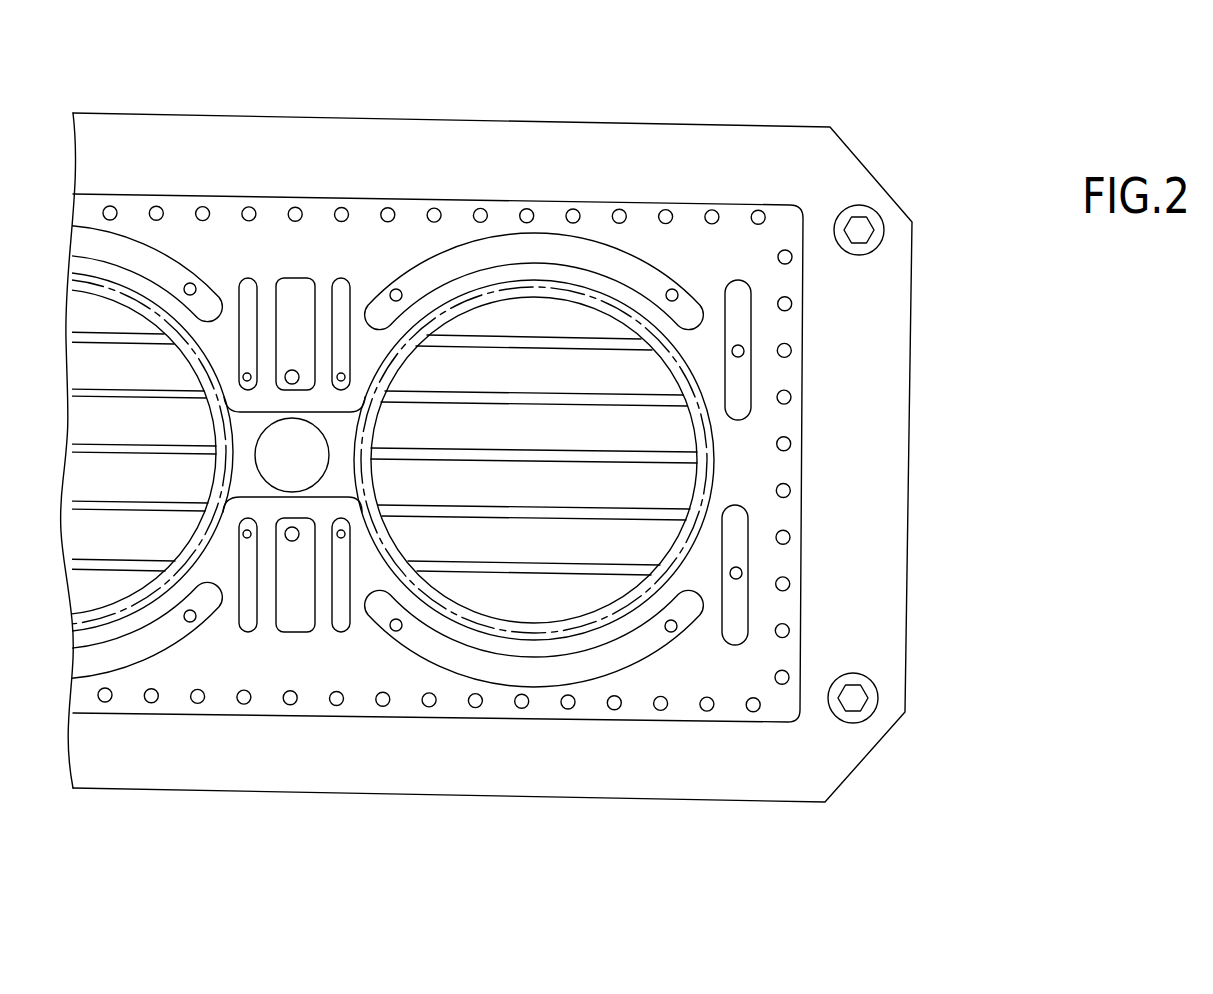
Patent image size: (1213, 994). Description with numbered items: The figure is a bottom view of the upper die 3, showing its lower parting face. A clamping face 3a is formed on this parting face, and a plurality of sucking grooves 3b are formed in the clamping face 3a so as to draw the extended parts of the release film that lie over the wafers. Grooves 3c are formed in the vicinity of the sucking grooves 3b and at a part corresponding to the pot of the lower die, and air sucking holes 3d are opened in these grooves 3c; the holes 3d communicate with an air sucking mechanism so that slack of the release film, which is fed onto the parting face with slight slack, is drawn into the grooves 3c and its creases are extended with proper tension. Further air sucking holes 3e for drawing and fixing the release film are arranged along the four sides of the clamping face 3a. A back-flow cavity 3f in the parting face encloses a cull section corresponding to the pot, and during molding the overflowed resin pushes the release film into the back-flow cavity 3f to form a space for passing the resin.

The upper die 3 is at (893, 127).
The clamping face 3a is at (763, 470).
The sucking grooves 3b is at (513, 338).
The grooves 3c is at (125, 247).
The air sucking holes 3d is at (191, 283).
The air sucking holes 3e is at (390, 207).
The back-flow cavity 3f is at (347, 470).